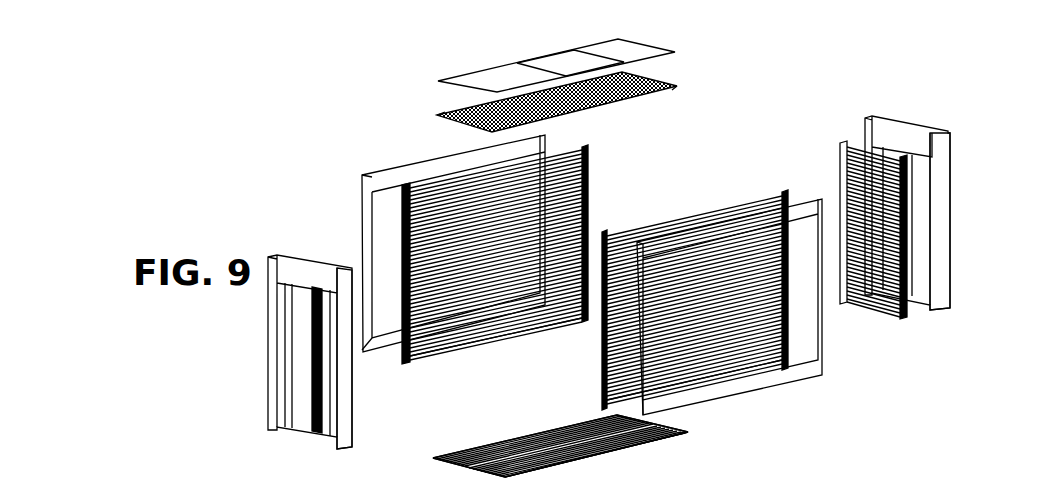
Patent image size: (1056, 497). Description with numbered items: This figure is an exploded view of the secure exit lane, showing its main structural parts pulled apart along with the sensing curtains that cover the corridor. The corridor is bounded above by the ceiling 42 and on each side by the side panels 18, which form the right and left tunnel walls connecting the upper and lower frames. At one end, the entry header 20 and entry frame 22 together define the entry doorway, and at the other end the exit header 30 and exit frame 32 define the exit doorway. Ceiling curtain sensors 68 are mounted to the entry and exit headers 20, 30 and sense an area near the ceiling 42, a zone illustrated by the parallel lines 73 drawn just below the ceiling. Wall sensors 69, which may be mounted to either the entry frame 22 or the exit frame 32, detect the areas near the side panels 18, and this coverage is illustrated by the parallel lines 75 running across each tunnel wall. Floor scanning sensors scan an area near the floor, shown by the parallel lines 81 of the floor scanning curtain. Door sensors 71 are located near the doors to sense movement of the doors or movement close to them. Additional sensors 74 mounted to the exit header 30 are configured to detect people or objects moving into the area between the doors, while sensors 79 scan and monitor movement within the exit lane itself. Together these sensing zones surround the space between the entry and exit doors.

The side panels 18 is at (370, 212).
The entry header 20 is at (300, 260).
The entry frame 22 is at (352, 390).
The exit header 30 is at (918, 124).
The exit frame 32 is at (946, 170).
The ceiling 42 is at (612, 47).
The ceiling curtain sensors 68 is at (645, 76).
The wall sensors 69 is at (588, 150).
The door sensors 71 is at (840, 150).
The parallel lines 73 is at (650, 96).
The sensors 74 is at (552, 463).
The parallel lines 75 is at (475, 343).
The sensors 79 is at (589, 488).
The parallel lines 81 is at (552, 430).